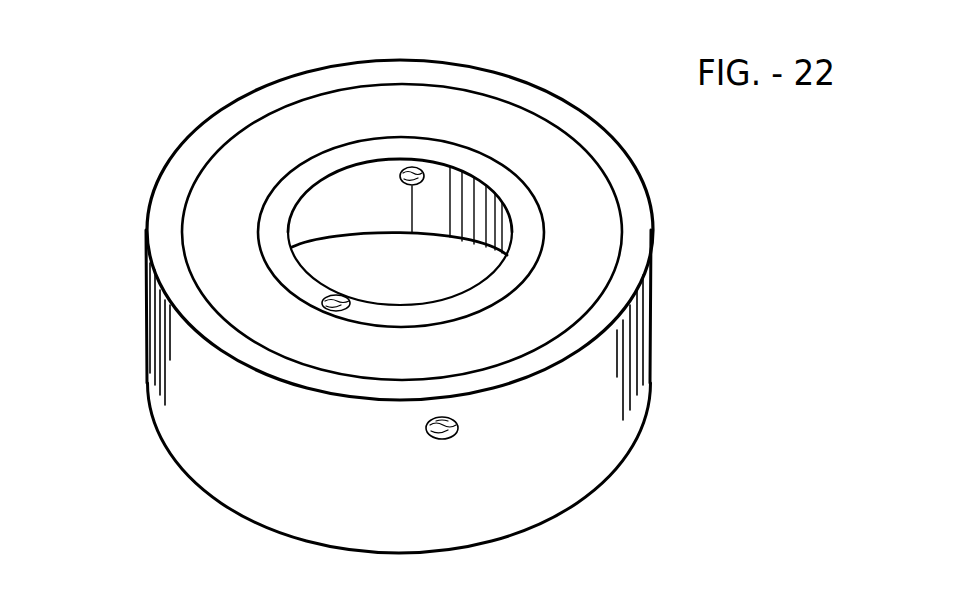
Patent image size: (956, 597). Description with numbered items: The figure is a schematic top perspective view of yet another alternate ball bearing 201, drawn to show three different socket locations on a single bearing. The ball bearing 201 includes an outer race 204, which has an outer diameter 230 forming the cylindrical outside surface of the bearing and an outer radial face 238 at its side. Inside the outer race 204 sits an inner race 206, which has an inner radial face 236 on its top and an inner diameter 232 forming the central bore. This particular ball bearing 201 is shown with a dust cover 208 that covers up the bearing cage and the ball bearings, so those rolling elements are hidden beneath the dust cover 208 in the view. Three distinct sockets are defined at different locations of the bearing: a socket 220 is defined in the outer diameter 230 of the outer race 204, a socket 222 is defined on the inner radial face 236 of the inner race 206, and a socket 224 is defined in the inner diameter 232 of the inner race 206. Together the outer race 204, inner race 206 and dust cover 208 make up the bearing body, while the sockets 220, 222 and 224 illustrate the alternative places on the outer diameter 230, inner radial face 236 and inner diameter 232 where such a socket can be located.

The ball bearing 201 is at (749, 192).
The outer race 204 is at (626, 270).
The inner race 206 is at (273, 228).
The dust cover 208 is at (548, 318).
The socket 220 is at (457, 431).
The socket 222 is at (330, 312).
The socket 224 is at (414, 170).
The outer diameter 230 is at (313, 483).
The inner diameter 232 is at (315, 213).
The inner radial face 236 is at (520, 212).
The outer radial face 238 is at (185, 292).